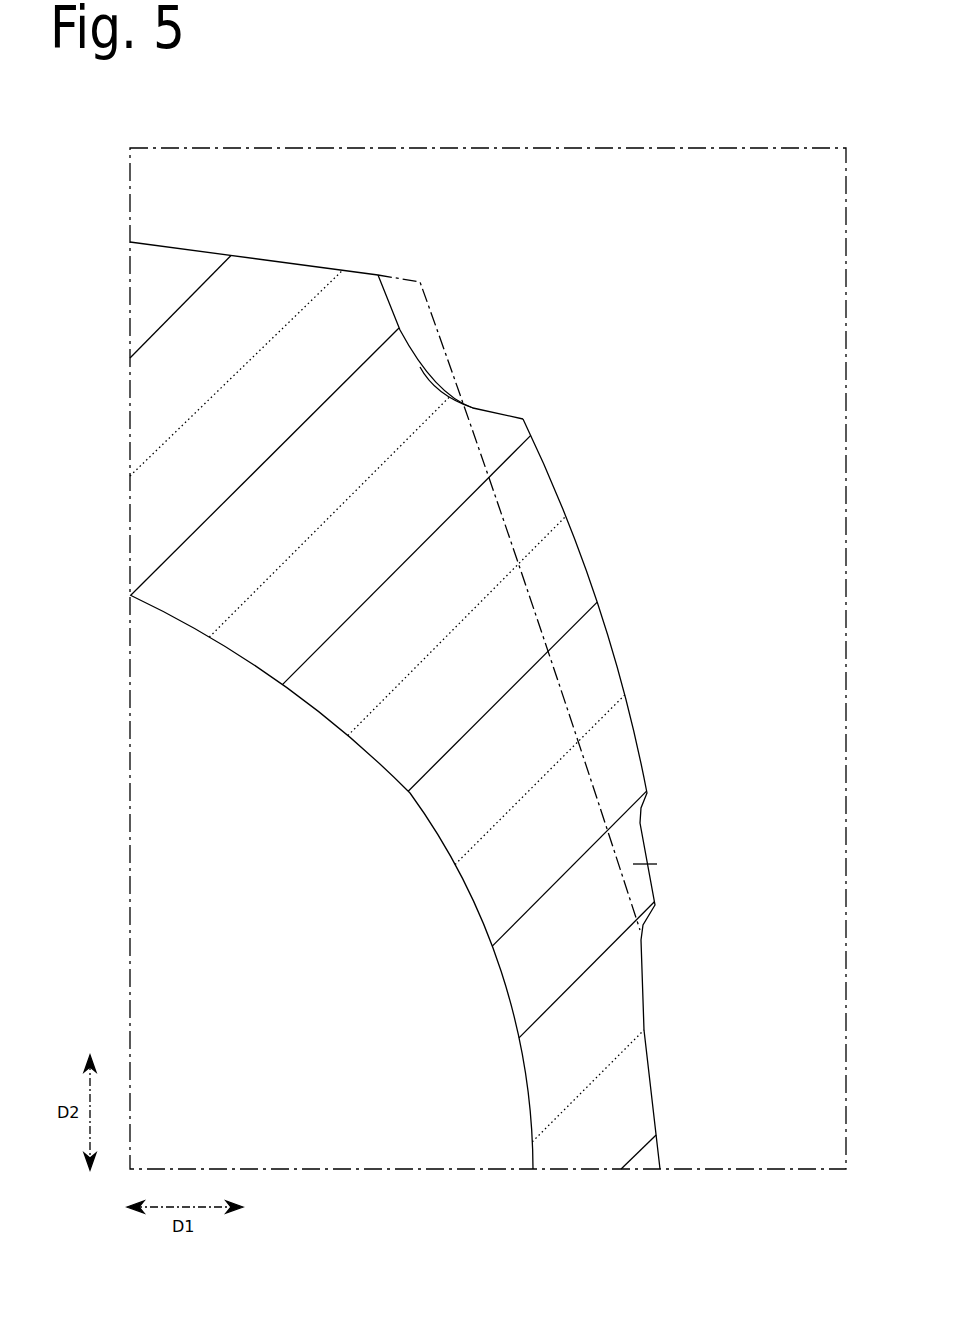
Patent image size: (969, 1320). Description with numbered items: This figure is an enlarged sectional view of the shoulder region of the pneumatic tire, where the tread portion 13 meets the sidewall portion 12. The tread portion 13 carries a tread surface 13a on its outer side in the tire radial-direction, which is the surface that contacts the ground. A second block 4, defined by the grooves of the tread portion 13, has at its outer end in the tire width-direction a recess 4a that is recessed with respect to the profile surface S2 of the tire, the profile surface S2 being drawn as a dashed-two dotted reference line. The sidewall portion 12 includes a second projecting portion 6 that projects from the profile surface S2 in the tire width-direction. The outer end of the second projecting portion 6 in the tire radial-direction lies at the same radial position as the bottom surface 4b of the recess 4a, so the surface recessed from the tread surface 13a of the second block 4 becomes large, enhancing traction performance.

The tread portion 13 is at (185, 188).
The tread surface 13a is at (243, 255).
The second block 4 is at (292, 256).
The recess 4a is at (416, 316).
The bottom surface 4b is at (445, 392).
The second projecting portion 6 is at (585, 563).
The profile surface S2 is at (636, 864).
The sidewall portion 12 is at (727, 1020).